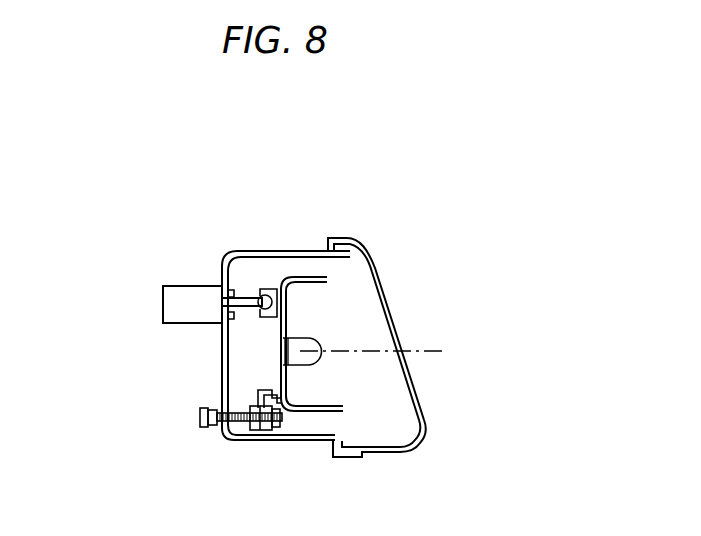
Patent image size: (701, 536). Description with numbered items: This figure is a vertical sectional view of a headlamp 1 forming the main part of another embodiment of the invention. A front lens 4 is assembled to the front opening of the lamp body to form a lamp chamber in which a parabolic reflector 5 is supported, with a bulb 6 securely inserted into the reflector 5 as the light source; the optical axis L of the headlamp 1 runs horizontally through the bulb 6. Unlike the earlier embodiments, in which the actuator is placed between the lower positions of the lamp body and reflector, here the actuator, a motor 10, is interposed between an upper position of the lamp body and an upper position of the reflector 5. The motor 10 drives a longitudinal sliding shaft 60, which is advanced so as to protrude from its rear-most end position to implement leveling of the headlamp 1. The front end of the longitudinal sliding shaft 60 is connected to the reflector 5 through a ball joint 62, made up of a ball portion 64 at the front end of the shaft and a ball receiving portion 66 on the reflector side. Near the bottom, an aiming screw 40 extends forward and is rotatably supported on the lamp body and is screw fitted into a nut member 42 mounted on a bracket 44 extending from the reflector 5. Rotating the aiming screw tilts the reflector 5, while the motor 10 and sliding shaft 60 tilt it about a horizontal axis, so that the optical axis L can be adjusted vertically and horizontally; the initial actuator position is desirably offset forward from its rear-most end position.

The automotive headlamp 1 is at (323, 209).
The front lens 4 is at (388, 293).
The parabolic reflector 5 is at (292, 257).
The bulb 6 is at (318, 337).
The motor 10 is at (194, 286).
The aiming screw 40 is at (206, 428).
The nut member 42 is at (265, 431).
The bracket 44 is at (262, 394).
The longitudinal sliding shaft 60 is at (224, 292).
The ball joint 62 is at (272, 151).
The ball portion 64 is at (261, 296).
The ball receiving portion 66 is at (273, 289).
The optical axis L is at (415, 349).